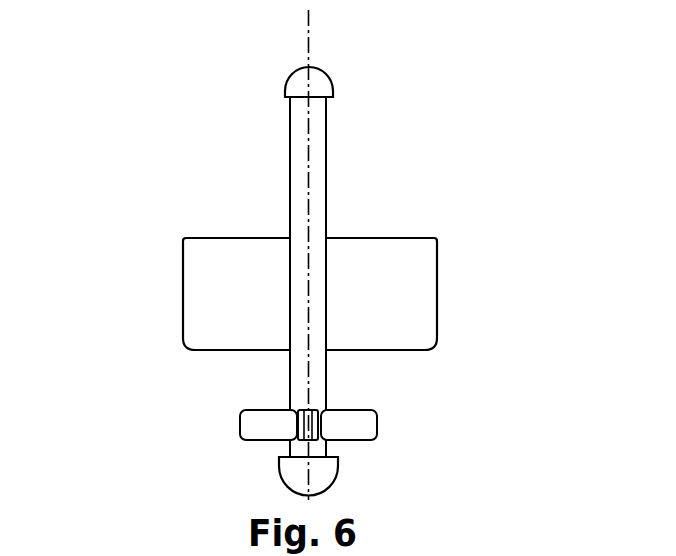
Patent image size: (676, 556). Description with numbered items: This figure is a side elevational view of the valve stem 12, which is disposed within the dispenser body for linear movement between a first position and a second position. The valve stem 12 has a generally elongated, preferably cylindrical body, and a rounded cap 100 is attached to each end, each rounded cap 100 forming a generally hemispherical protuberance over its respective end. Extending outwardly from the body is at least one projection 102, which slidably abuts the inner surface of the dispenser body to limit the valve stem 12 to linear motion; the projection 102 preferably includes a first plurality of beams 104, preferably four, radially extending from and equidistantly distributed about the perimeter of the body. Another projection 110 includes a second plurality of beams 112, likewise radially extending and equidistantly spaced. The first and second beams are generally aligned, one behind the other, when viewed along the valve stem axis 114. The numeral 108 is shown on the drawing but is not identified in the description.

The valve stem 12 is at (417, 155).
The rounded cap 100 is at (317, 80).
The projection 102 is at (345, 417).
The first plurality of beams 104 is at (257, 418).
The collar end 108 is at (240, 433).
The another projection 110 is at (407, 310).
The second plurality of beams 112 is at (270, 310).
The valve stem axis 114 is at (308, 28).